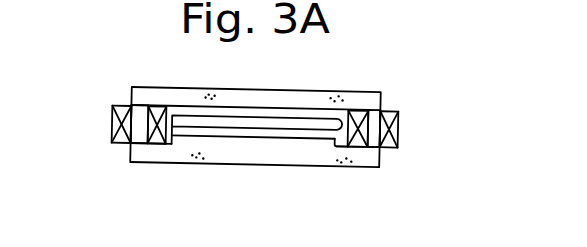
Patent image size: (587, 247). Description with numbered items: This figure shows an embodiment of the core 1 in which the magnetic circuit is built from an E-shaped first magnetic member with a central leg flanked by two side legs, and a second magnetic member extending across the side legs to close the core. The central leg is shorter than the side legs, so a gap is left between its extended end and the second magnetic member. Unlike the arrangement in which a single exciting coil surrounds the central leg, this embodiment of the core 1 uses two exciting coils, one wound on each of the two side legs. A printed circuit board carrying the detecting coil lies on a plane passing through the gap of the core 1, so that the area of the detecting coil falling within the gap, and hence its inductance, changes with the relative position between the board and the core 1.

The core 1 is at (418, 104).